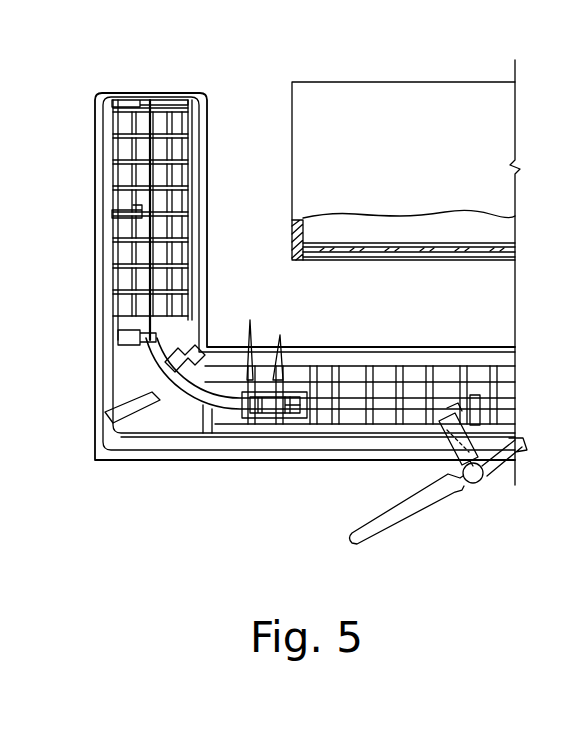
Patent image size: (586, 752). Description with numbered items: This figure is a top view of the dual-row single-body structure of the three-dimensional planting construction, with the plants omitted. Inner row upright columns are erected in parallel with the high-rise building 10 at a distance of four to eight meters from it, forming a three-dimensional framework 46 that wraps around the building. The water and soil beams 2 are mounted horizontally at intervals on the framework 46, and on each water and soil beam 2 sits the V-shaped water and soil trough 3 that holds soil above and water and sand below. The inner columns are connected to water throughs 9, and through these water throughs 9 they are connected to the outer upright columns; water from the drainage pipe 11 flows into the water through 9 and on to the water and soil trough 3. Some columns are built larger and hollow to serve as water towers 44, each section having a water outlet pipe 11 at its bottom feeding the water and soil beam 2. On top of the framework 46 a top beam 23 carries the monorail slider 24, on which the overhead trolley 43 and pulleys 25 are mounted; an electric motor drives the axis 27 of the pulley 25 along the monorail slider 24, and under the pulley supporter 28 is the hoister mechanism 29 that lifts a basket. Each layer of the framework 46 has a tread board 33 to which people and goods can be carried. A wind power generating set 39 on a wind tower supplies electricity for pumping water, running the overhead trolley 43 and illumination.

The water and soil beam 2 is at (96, 298).
The water and soil trough 3 is at (118, 93).
The water through 9 is at (148, 235).
The high-rise building 10 is at (293, 222).
The drainage pipe 11 is at (120, 103).
The top beam 23 is at (170, 185).
The monorail slider 24 is at (116, 213).
The pulley 25 is at (298, 332).
The axis of the pulley 27 is at (258, 417).
The pulley supporter 28 is at (293, 390).
The hoister mechanism 29 is at (303, 402).
The tread board 33 is at (130, 388).
The wind power generating set 39 is at (478, 478).
The overhead trolley 43 is at (266, 312).
The water tower 44 is at (463, 457).
The three-dimensional framework 46 is at (433, 427).